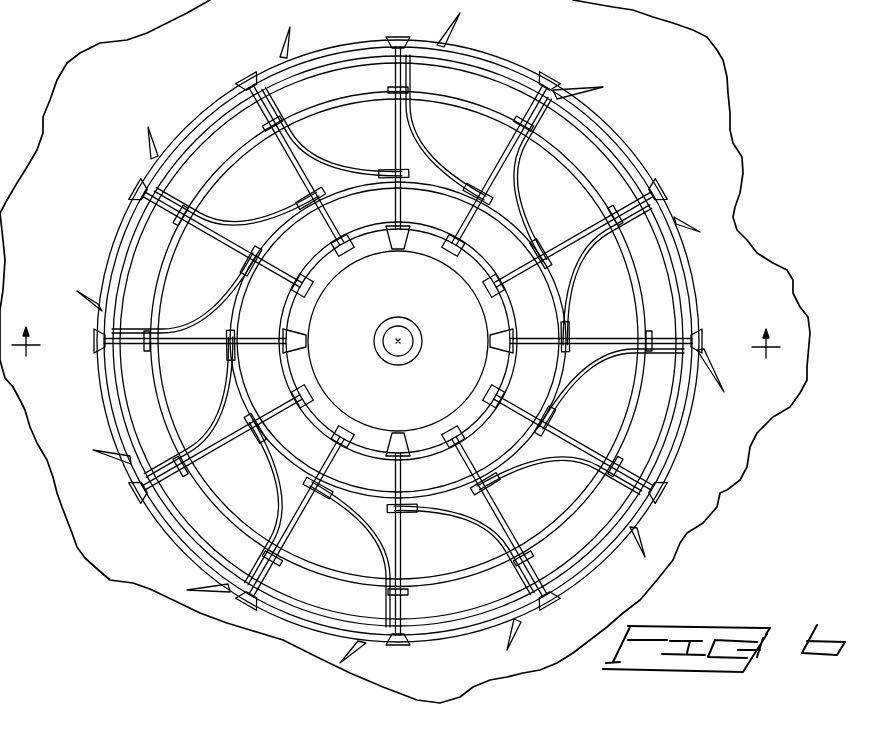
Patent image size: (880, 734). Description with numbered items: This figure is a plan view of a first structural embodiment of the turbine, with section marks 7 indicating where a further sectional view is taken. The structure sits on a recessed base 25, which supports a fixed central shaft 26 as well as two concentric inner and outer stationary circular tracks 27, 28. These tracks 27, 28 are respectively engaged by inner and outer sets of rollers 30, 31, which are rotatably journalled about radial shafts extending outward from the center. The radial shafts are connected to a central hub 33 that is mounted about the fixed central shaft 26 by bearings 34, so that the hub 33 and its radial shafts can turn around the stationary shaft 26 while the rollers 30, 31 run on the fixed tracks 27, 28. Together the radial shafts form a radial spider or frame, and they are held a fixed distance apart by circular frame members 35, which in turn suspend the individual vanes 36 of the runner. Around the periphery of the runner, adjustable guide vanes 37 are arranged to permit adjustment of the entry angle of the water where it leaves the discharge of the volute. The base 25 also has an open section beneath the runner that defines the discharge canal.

The section line 7- 7 is at (396, 340).
The recessed base 25 is at (735, 144).
The fixed central shaft 26 is at (403, 341).
The inner stationary circular track 27 is at (384, 453).
The outer stationary circular track 28 is at (470, 637).
The inner set of rollers 30 is at (393, 243).
The outer set of rollers 31 is at (542, 80).
The central hub 33 is at (412, 399).
The bearings 34 is at (414, 354).
The circular frame members 35 is at (474, 492).
The vanes 36 is at (322, 158).
The adjustable guide vanes 37 is at (452, 28).